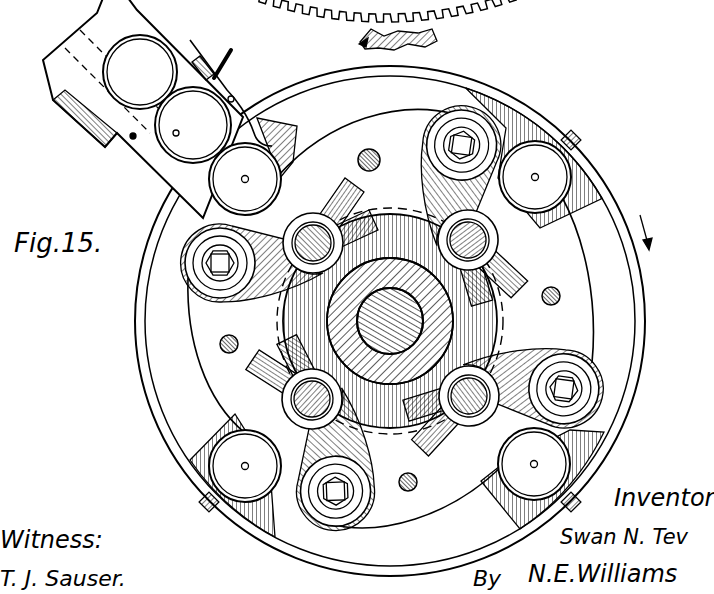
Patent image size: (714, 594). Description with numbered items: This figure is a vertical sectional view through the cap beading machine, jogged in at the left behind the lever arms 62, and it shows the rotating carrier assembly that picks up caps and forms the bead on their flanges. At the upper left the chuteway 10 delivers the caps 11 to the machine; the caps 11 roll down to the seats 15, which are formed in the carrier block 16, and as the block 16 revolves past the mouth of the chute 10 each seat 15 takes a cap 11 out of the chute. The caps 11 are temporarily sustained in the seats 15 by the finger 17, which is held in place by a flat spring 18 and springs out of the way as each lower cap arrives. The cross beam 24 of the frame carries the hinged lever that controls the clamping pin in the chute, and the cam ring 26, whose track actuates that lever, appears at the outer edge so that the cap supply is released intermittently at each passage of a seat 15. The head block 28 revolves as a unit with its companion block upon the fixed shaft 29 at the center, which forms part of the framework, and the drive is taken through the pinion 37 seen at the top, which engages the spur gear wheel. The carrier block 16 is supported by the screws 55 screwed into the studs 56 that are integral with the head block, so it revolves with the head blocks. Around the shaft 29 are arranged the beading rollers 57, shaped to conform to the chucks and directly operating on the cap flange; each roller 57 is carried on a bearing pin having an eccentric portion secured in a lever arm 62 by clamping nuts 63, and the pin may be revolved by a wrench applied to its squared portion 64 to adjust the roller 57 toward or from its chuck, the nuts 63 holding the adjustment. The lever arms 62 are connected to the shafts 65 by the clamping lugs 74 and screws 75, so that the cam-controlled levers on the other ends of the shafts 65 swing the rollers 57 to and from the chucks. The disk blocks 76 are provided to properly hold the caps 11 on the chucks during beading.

The chuteway 10 is at (83, 50).
The caps 11 is at (183, 97).
The seats 15 is at (479, 507).
The block 16 is at (334, 143).
The finger 17 is at (276, 140).
The flat spring 18 is at (232, 93).
The cross beam 24 is at (90, 128).
The cam ring 26 is at (640, 301).
The head block 28 is at (566, 205).
The fixed shaft 29 is at (418, 324).
The pinion 37 is at (438, 38).
The screws 55 is at (373, 150).
The studs 56 is at (381, 160).
The beading rollers 57 is at (215, 295).
The lever arm 62 is at (494, 241).
The clamping nuts 63 is at (217, 280).
The squared portion 64 is at (205, 255).
The shafts 65 is at (315, 228).
The clamping lugs 74 is at (542, 280).
The screws 75 is at (524, 268).
The disk blocks 76 is at (543, 153).